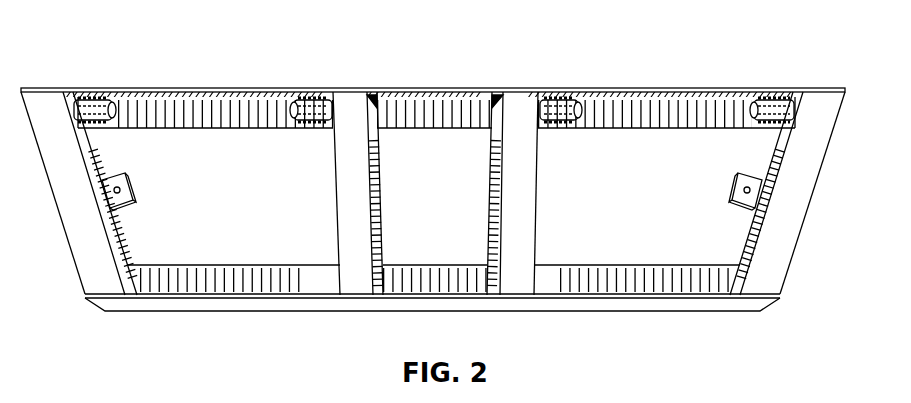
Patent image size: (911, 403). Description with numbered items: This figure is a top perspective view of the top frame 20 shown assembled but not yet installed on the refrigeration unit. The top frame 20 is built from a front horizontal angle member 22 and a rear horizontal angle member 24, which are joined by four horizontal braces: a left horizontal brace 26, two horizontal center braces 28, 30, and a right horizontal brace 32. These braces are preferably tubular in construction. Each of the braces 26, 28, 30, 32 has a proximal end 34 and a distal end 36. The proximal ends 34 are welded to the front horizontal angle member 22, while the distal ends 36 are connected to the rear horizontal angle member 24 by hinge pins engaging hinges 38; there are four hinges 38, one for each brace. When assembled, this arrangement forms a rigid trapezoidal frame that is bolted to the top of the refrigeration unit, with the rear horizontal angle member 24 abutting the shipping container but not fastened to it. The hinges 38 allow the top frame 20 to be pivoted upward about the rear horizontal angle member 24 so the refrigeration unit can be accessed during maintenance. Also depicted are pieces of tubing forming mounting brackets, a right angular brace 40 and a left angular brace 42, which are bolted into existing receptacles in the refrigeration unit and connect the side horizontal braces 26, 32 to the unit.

The top frame 20 is at (440, 85).
The front horizontal angle member 22 is at (229, 283).
The rear horizontal angle member 24 is at (186, 107).
The left horizontal brace 26 is at (78, 230).
The horizontal center brace 28 is at (355, 273).
The horizontal center brace 30 is at (512, 272).
The right horizontal brace 32 is at (783, 222).
The proximal end 34 is at (85, 292).
The distal end 36 is at (43, 100).
The hinge 38 is at (92, 104).
The right angular brace 40 is at (110, 190).
The left angular brace 42 is at (762, 185).